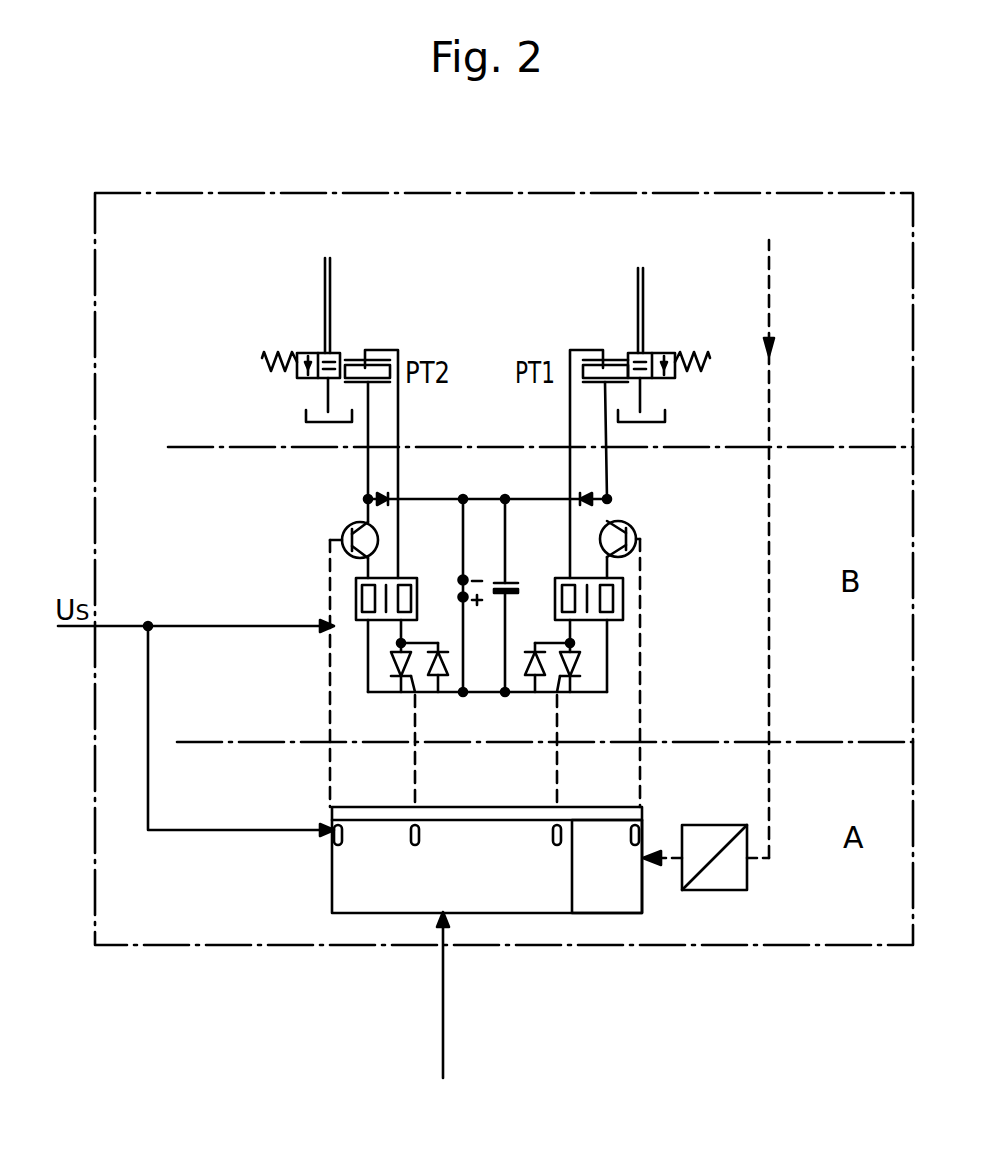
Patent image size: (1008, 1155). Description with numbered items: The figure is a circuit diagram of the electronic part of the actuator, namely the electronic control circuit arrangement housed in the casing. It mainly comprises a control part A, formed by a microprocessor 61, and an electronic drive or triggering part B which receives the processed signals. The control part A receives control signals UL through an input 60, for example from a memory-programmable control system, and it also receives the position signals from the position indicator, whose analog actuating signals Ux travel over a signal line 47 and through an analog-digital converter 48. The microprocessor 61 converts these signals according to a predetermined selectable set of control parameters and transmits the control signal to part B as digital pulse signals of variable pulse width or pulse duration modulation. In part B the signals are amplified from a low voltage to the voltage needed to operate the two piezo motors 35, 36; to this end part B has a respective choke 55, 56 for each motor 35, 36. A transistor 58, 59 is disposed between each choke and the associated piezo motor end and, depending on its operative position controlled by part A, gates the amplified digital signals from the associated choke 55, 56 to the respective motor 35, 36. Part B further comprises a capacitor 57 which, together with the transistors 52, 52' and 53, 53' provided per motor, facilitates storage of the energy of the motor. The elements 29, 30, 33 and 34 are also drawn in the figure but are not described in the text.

The piston rod of right actuator 29 is at (641, 290).
The piston rod of left actuator 30 is at (327, 297).
The right control valve 33 is at (673, 380).
The left control valve 34 is at (297, 379).
The piezo motor 35 is at (596, 370).
The piezo motor 36 is at (370, 368).
The signal line 47 is at (770, 278).
The analog-digital converter 48 is at (747, 885).
The transistor 52 is at (549, 713).
The transistor 52' is at (621, 483).
The transistor 53 is at (408, 713).
The transistor 53' is at (342, 483).
The choke 55 is at (624, 585).
The choke 56 is at (356, 584).
The capacitor 57 is at (512, 585).
The transistor 58 is at (632, 532).
The transistor 59 is at (345, 534).
The input 60 is at (443, 1022).
The microprocessor 61 is at (340, 870).